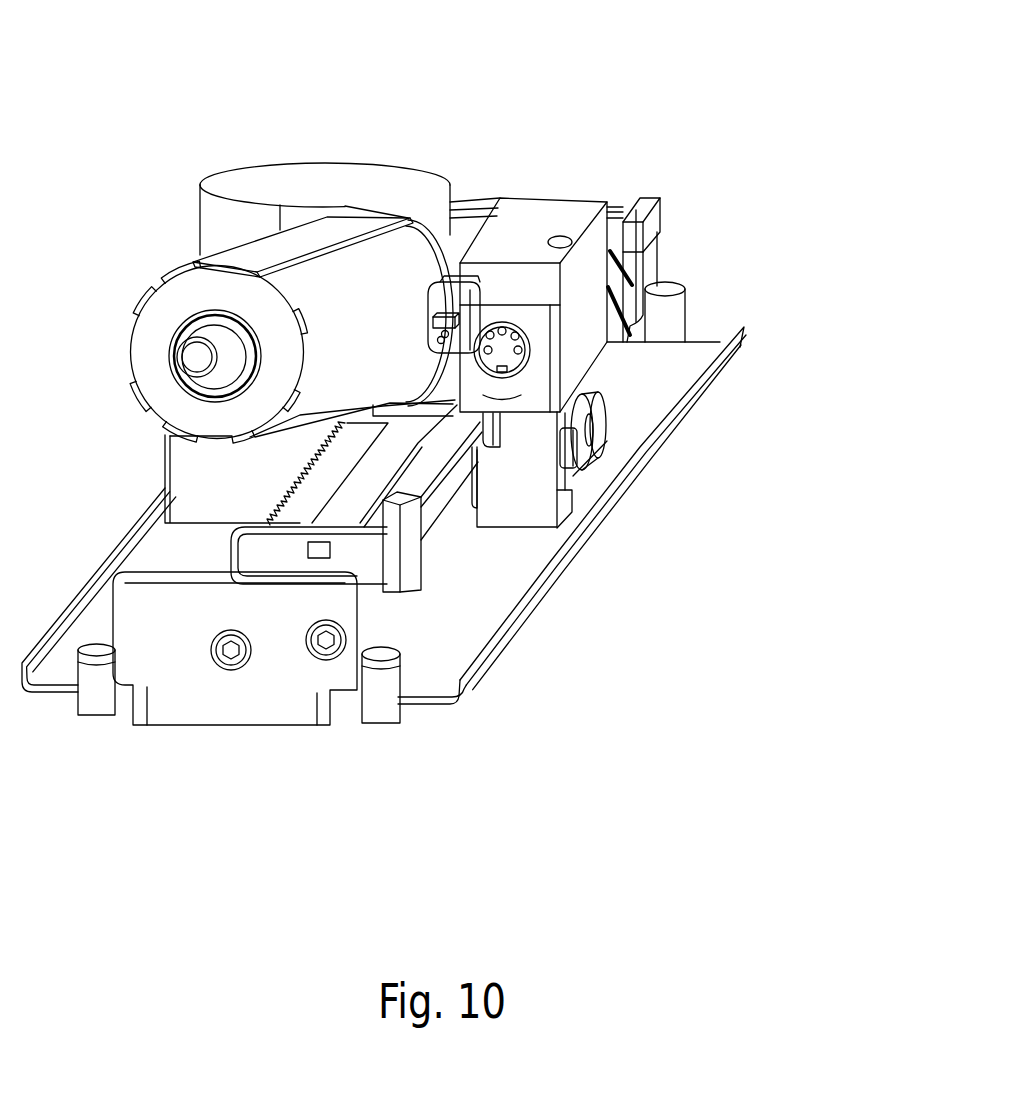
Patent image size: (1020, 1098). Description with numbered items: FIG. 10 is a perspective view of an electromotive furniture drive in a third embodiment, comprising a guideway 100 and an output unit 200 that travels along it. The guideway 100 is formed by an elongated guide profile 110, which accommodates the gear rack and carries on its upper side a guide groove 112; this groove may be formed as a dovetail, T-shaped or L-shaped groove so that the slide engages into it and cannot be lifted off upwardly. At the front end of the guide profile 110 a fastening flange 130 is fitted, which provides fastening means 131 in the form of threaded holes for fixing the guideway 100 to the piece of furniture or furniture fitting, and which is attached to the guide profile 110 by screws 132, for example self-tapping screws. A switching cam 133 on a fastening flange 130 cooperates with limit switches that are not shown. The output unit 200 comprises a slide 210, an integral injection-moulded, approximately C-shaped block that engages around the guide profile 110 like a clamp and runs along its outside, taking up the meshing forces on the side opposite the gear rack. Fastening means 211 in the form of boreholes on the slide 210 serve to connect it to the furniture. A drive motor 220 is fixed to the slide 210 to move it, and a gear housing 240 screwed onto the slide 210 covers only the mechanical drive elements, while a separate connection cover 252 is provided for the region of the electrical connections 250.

The guideway 100 is at (513, 695).
The guide profile 110 is at (422, 543).
The guide groove 112 is at (360, 512).
The fastening flange 130 is at (188, 709).
The fastening means 131 is at (94, 683).
The screw 132 is at (315, 657).
The switching cam 133 is at (651, 215).
The output unit 200 is at (215, 130).
The slide 210 is at (182, 477).
The fastening means 211 is at (603, 420).
The drive motor 220 is at (160, 303).
The gear housing 240 is at (318, 173).
The electrical connections 250 is at (490, 300).
The connection cover 252 is at (514, 203).